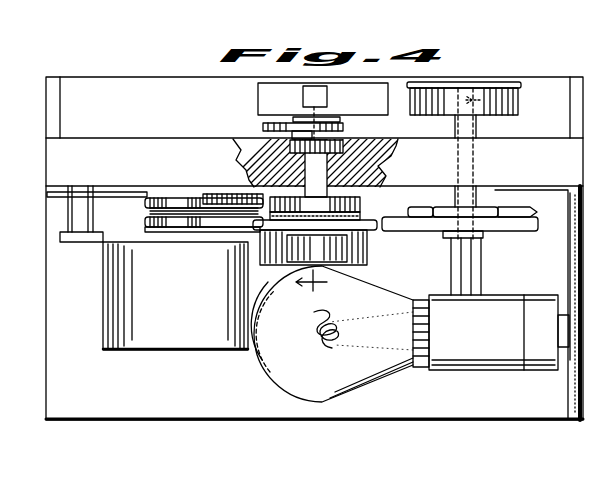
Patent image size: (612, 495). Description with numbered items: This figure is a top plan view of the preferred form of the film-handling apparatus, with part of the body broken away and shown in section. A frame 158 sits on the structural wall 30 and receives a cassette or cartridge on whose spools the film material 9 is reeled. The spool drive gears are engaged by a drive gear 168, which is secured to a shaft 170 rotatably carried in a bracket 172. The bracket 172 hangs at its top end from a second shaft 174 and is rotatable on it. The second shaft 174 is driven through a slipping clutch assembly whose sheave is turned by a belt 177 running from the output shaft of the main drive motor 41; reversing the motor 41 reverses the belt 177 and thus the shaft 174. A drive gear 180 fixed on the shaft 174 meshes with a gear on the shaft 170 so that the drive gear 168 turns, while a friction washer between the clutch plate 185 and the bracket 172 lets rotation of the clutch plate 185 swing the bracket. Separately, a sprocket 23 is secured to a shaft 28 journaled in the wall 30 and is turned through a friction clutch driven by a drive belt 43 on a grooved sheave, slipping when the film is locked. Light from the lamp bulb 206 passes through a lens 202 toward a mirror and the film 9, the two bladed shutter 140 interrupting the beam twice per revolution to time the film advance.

The frame 158 is at (139, 80).
The structural wall 30 is at (583, 150).
The drive gear 168 is at (257, 120).
The film material 9 is at (317, 217).
The shaft 170 is at (265, 132).
The bracket 172 is at (389, 173).
The second shaft 174 is at (254, 170).
The drive gear 180 is at (358, 140).
The two bladed shutter 140 is at (148, 178).
The belt 177 is at (148, 226).
The main drive motor 41 is at (105, 314).
The clutch plate 185 is at (355, 216).
The lens 202 is at (369, 257).
The lamp bulb 206 is at (273, 366).
The sprocket 23 is at (488, 83).
The shaft 28 is at (476, 128).
The drive belt 43 is at (510, 198).